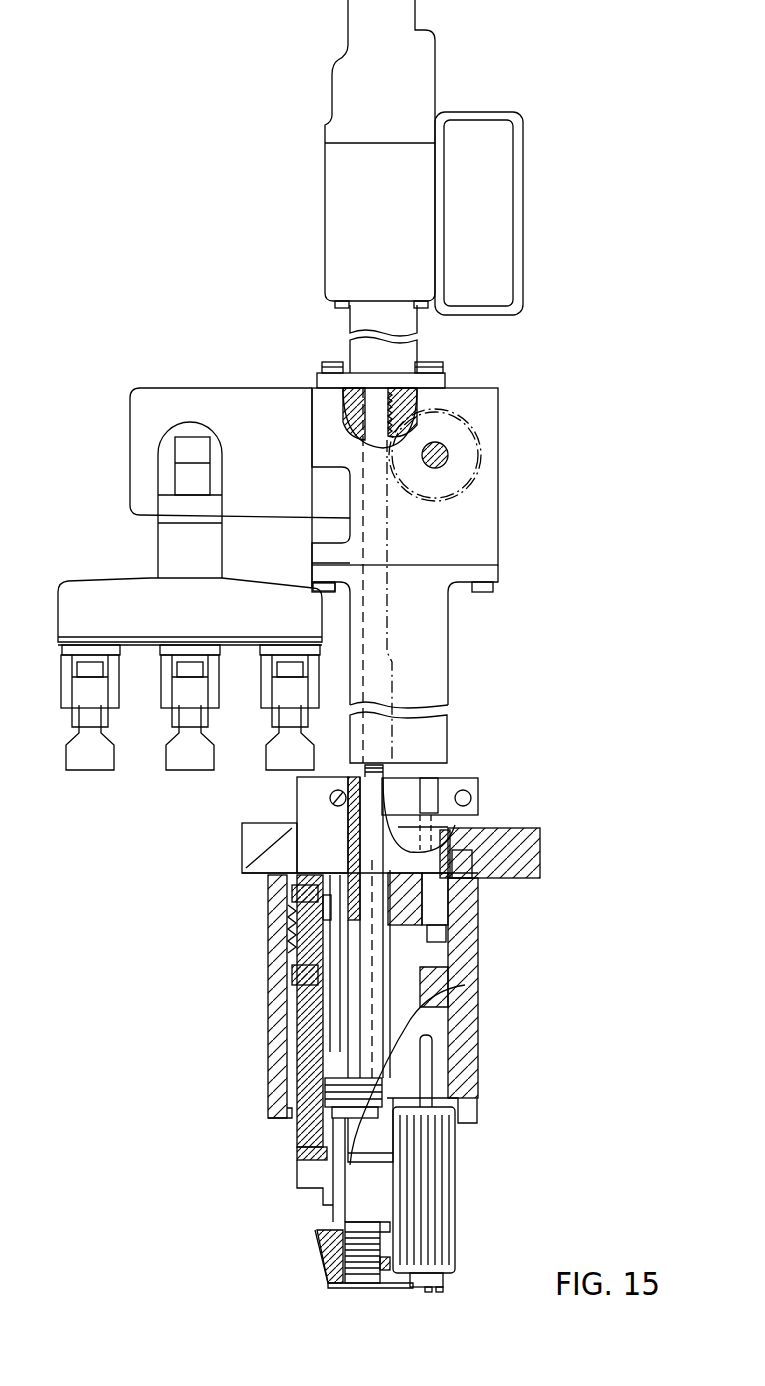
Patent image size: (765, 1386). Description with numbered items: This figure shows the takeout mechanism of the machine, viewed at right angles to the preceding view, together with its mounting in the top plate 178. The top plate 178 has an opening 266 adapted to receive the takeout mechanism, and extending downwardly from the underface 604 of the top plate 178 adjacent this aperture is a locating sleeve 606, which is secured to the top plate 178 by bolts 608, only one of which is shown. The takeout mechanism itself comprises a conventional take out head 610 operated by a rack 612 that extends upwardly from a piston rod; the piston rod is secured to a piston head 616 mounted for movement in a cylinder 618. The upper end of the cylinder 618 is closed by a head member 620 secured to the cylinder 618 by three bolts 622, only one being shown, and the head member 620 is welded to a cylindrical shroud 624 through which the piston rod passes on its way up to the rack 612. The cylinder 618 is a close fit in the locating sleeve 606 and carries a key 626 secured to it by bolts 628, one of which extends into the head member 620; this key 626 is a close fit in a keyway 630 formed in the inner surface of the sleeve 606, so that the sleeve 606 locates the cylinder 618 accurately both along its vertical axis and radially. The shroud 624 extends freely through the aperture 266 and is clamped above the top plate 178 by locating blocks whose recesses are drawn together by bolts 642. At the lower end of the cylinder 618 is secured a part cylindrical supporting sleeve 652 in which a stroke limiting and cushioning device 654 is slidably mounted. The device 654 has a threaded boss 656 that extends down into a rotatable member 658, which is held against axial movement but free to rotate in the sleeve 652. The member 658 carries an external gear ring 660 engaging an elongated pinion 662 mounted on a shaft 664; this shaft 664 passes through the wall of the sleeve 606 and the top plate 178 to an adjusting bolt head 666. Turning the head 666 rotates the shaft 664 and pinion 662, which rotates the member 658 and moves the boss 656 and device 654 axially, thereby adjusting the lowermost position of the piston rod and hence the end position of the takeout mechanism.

The take out head 610 is at (108, 780).
The rack 612 is at (378, 400).
The bolts 642 is at (330, 798).
The adjusting bolt head 666 is at (437, 790).
The opening 266 is at (443, 862).
The bolts 608 is at (470, 852).
The top plate 178 is at (528, 848).
The underface 604 is at (508, 892).
The cylindrical shroud 624 is at (297, 823).
The bolts 628 is at (297, 893).
The head member 620 is at (327, 907).
The key 626 is at (285, 936).
The bolts 622 is at (448, 931).
The locating sleeve 606 is at (470, 983).
The cylinder 618 is at (310, 1032).
The piston head 616 is at (327, 1090).
The keyway 630 is at (290, 1120).
The shaft 664 is at (435, 1060).
The elongated pinion 662 is at (447, 1185).
The stroke limiting and cushioning device 654 is at (353, 1196).
The part cylindrical supporting sleeve 652 is at (325, 1232).
The external gear ring 660 is at (318, 1253).
The rotatable member 658 is at (322, 1237).
The threaded boss 656 is at (362, 1267).